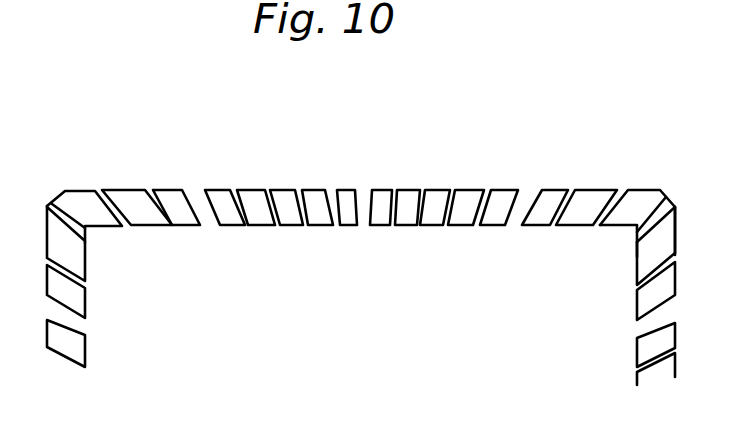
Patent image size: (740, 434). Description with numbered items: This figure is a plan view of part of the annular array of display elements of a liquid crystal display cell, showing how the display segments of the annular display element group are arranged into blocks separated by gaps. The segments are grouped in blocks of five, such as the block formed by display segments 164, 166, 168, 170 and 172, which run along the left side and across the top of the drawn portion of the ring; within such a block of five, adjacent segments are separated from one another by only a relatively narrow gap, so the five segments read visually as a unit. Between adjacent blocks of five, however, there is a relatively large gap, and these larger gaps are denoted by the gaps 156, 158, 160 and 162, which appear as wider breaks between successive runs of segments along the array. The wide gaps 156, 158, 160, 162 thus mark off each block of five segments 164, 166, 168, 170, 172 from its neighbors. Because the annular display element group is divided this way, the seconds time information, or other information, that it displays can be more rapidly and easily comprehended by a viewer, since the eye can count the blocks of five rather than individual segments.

The relatively large gap between adjacent blocks 156 is at (77, 325).
The relatively large gap between adjacent blocks 158 is at (202, 194).
The relatively large gap between adjacent blocks 160 is at (365, 200).
The relatively large gap between adjacent blocks 162 is at (527, 200).
The display segment 164 is at (83, 299).
The display segment 166 is at (83, 256).
The display segment 168 is at (72, 194).
The display segment 170 is at (125, 193).
The display segment 172 is at (170, 193).